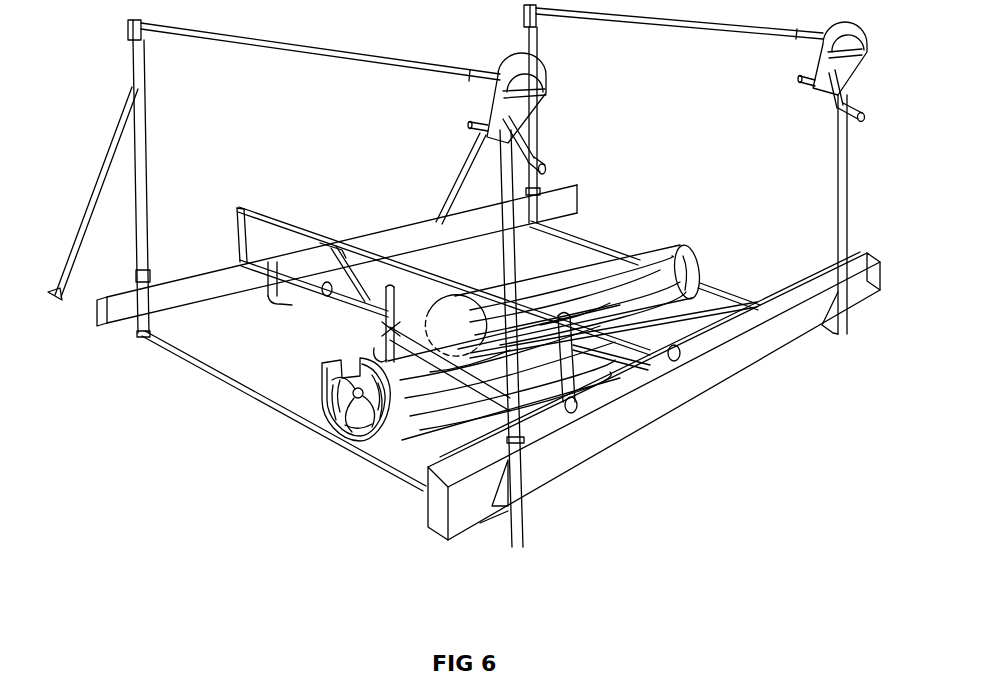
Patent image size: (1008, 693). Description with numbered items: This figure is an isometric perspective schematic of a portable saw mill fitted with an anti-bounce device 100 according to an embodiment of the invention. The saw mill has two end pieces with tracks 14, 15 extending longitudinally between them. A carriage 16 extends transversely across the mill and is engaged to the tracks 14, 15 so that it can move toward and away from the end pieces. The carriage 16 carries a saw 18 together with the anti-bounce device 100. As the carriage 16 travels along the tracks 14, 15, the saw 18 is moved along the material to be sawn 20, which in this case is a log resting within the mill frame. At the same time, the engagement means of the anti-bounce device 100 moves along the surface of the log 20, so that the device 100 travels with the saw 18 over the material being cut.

The track 14 is at (126, 333).
The track 15 is at (626, 446).
The carriage 16 is at (484, 404).
The saw 18 is at (452, 298).
The material to be sawn 20 is at (320, 431).
The anti-bounce device 100 is at (368, 351).